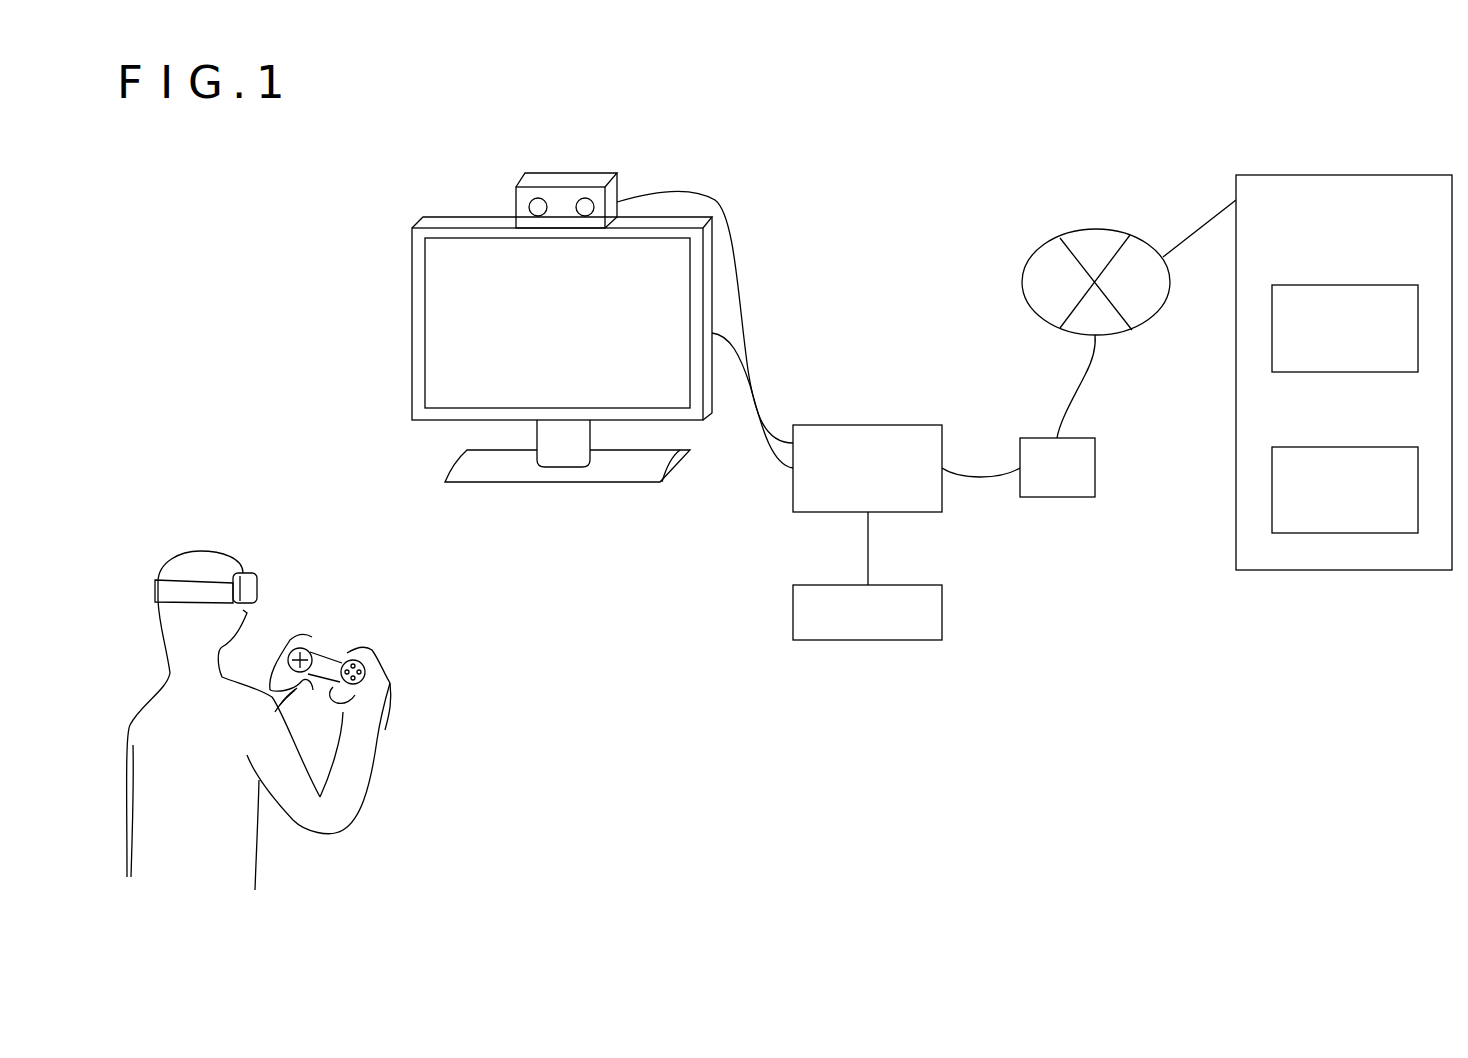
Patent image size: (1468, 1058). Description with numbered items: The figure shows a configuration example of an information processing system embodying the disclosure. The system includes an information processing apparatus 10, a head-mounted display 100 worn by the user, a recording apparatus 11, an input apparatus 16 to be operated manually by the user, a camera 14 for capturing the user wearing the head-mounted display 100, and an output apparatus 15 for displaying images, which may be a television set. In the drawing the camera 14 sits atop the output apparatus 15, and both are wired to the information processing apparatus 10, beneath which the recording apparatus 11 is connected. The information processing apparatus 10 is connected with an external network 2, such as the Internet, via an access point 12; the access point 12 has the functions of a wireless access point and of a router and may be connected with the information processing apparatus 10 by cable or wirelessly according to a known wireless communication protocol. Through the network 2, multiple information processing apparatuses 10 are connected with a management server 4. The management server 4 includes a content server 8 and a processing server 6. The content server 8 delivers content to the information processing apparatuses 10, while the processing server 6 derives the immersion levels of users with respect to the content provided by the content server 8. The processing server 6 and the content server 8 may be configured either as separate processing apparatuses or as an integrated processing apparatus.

The external network 2 is at (1093, 228).
The management server 4 is at (1345, 175).
The processing server 6 is at (1345, 285).
The content server 8 is at (1345, 447).
The information processing apparatus 10 is at (915, 425).
The recording apparatus 11 is at (915, 585).
The access point 12 is at (1067, 497).
The camera 14 is at (572, 175).
The output apparatus 15 is at (412, 326).
The input apparatus 16 is at (333, 657).
The head-mounted display 100 is at (162, 590).